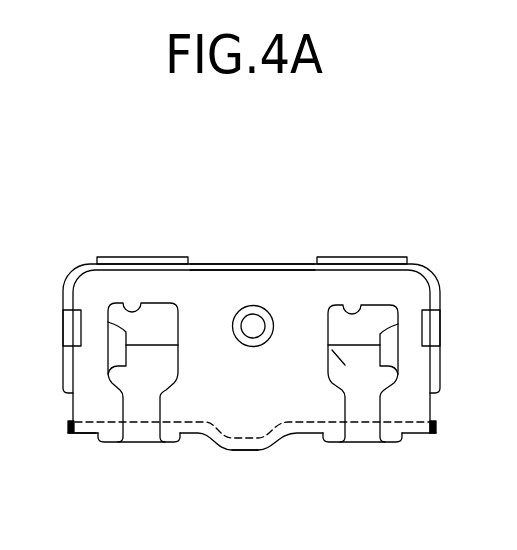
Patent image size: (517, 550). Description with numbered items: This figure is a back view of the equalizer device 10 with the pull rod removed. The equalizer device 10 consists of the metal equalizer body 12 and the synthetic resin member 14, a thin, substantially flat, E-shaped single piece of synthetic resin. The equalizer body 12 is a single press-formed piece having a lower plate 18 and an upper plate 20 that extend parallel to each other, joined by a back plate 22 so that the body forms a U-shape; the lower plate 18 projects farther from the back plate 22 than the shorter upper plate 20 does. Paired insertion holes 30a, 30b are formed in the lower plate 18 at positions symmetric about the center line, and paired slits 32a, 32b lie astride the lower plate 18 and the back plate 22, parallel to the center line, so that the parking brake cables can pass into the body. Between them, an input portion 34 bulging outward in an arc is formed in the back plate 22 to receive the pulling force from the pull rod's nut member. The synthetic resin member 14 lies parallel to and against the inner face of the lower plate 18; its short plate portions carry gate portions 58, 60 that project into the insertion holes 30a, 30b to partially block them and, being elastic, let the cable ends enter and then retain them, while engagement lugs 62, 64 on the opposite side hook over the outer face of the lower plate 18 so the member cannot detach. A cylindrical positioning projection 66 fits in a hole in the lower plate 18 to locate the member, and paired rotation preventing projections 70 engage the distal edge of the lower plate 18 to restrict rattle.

The equalizer device 10 is at (415, 208).
The equalizer body 12 is at (403, 467).
The synthetic resin member 14 is at (57, 251).
The lower plate 18 is at (210, 295).
The upper plate 20 is at (345, 365).
The back plate 22 is at (92, 432).
The insertion hole 30a is at (345, 312).
The insertion hole 30b is at (133, 312).
The slit 32a is at (343, 407).
The slit 32b is at (123, 408).
The input portion 34 is at (253, 450).
The gate portion 58 is at (386, 354).
The gate portion 60 is at (117, 357).
The engagement lug 62 is at (432, 326).
The engagement lug 64 is at (73, 327).
The positioning projection 66 is at (260, 306).
The rotation preventing projection 70 is at (157, 257).